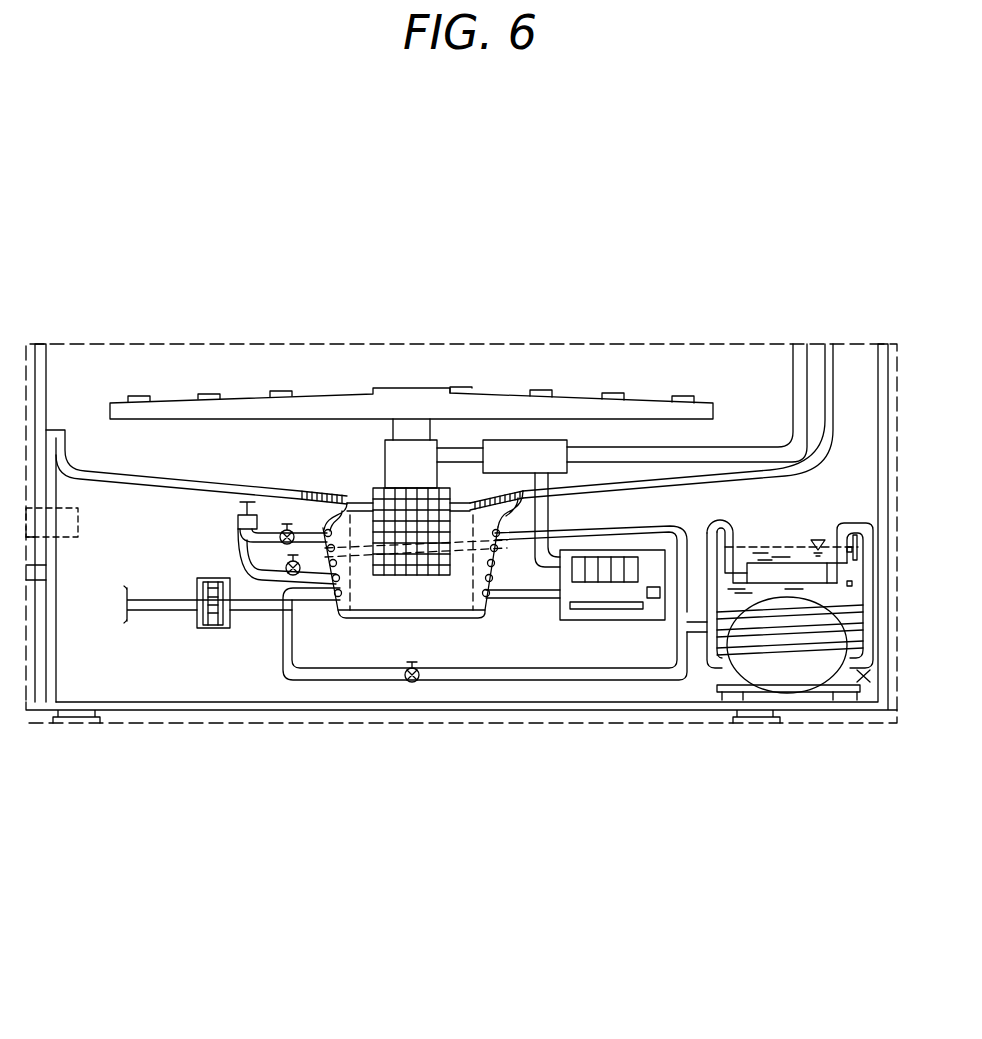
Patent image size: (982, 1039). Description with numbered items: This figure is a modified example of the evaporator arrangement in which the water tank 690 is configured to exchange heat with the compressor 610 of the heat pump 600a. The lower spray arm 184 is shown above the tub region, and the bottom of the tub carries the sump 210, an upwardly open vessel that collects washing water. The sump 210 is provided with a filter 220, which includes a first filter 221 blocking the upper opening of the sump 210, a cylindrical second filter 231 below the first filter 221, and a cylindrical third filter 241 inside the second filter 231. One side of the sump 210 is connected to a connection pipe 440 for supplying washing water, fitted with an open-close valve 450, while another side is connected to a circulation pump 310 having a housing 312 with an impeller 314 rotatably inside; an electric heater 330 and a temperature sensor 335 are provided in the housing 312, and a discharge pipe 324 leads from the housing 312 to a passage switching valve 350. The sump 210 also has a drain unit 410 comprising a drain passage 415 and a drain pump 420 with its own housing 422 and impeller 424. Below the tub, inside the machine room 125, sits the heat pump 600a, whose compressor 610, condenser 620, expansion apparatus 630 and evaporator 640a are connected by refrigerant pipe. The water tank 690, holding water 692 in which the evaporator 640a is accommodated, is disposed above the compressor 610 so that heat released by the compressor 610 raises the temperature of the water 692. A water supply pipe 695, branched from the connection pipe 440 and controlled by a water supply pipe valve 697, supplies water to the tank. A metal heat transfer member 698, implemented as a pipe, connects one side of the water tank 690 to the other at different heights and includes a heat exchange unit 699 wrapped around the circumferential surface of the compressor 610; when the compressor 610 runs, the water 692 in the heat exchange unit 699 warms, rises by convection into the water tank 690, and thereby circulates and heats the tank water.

The machine room 125 is at (870, 682).
The lower spray arm 184 is at (465, 400).
The sump 210 is at (503, 580).
The filter 220 is at (417, 268).
The first filter 221 is at (318, 512).
The second filter 231 is at (362, 537).
The third filter 241 is at (402, 503).
The circulation pump 310 is at (718, 268).
The housing 312 is at (658, 590).
The impeller 314 is at (607, 558).
The discharge pipe 324 is at (547, 512).
The electric heater 330 is at (688, 545).
The temperature sensor 335 is at (722, 545).
The passage switching valve 350 is at (513, 445).
The drain unit 410 is at (103, 823).
The drain passage 415 is at (152, 607).
The drain pump 420 is at (150, 780).
The housing 422 is at (203, 628).
The impeller 424 is at (213, 622).
The connection pipe 440 is at (253, 515).
The open-close valve 450 is at (283, 528).
The heat pump 600a is at (787, 823).
The compressor 610 is at (748, 672).
The condenser 620 is at (362, 560).
The expansion apparatus 630 is at (410, 688).
The evaporator 640a is at (770, 575).
The water tank 690 is at (870, 524).
The water 692 is at (797, 587).
The water supply pipe 695 is at (267, 537).
The water supply pipe valve 697 is at (243, 577).
The heat transfer member 698 is at (703, 652).
The heat exchange unit 699 is at (855, 558).